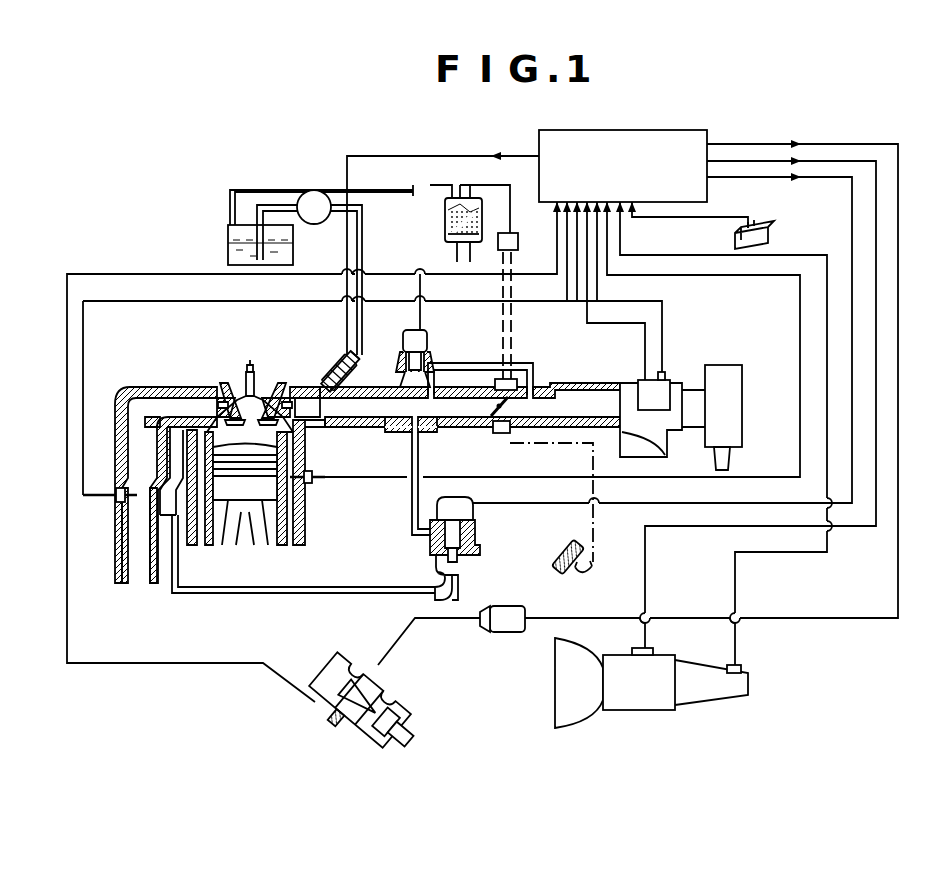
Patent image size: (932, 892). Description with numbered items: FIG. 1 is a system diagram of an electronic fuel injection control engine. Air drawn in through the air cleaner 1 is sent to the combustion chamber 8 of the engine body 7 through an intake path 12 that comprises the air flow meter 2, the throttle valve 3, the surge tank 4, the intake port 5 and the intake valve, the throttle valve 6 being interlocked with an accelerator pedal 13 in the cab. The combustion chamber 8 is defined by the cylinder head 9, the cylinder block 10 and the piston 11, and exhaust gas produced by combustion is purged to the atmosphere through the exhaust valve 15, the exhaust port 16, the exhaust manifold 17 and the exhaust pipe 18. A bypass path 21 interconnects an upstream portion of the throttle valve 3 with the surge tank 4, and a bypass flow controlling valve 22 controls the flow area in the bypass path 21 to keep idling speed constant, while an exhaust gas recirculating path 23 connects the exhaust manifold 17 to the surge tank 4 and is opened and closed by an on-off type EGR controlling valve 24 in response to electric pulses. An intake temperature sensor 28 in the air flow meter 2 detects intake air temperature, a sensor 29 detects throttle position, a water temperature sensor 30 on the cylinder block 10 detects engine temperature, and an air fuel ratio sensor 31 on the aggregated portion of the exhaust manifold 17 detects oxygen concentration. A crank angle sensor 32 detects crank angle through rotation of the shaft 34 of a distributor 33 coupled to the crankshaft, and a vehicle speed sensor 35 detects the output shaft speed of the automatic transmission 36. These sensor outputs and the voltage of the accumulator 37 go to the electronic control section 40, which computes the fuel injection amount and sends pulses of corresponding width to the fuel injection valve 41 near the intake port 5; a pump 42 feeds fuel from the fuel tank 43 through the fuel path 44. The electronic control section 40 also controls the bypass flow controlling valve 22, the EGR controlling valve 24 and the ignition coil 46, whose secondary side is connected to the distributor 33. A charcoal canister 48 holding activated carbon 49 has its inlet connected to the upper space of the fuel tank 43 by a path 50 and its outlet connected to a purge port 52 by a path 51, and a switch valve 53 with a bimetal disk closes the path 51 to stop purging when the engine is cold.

The air cleaner 1 is at (735, 440).
The air flow meter 2 is at (628, 440).
The throttle valve 3 is at (495, 412).
The surge tank 4 is at (406, 432).
The intake port 5 is at (305, 395).
The throttle valve 6 is at (288, 405).
The engine body 7 is at (221, 461).
The combustion chamber 8 is at (258, 412).
The cylinder head 9 is at (278, 395).
The cylinder block 10 is at (306, 445).
The piston 11 is at (245, 506).
The intake path 12 is at (473, 400).
The accelerator pedal 13 is at (571, 572).
The exhaust valve 15 is at (222, 400).
The exhaust port 16 is at (208, 398).
The exhaust manifold 17 is at (118, 400).
The exhaust pipe 18 is at (122, 568).
The bypass path 21 is at (535, 370).
The bypass flow controlling valve 22 is at (428, 340).
The exhaust gas recirculating (EGR) path 23 is at (318, 596).
The exhaust gas recirculating (EGR) controlling valve 24 is at (478, 535).
The intake temperature sensor 28 is at (666, 372).
The sensor 29 is at (498, 434).
The water temperature sensor 30 is at (318, 481).
The air fuel ratio sensor 31 is at (110, 500).
The crank angle sensor 32 is at (336, 717).
The distributor 33 is at (353, 714).
The shaft 34 is at (402, 700).
The vehicle speed sensor 35 is at (742, 670).
The automatic transmission 36 is at (631, 710).
The accumulator 37 is at (774, 230).
The electronic control section 40 is at (708, 136).
The fuel injection valve 41 is at (358, 372).
The pump 42 is at (315, 190).
The fuel tank 43 is at (228, 252).
The fuel path 44 is at (262, 205).
The ignition coil 46 is at (515, 632).
The charcoal canister 48 is at (440, 240).
The activated carbon 49 is at (514, 240).
The path 50 is at (404, 182).
The path 51 is at (512, 222).
The purge port 52 is at (520, 384).
The switch valve 53 is at (513, 270).